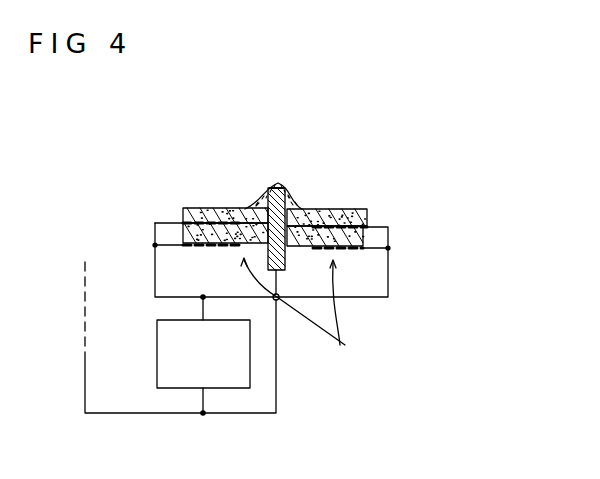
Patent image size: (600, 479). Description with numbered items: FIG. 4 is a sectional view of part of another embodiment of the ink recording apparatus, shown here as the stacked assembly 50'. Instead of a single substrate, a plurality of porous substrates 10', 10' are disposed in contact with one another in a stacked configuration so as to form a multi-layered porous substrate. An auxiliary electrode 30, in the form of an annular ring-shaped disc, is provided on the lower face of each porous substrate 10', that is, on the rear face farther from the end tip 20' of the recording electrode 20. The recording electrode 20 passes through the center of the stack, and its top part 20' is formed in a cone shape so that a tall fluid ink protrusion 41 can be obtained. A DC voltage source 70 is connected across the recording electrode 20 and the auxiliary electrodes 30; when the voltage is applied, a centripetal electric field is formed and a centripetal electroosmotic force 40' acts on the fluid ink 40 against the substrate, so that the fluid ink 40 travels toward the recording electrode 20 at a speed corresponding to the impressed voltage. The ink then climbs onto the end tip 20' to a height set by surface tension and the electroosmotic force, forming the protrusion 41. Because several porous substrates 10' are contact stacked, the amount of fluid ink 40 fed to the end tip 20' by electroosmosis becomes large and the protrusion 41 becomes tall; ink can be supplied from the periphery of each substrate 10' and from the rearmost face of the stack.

The piezoelectric device assembly 50' is at (238, 232).
The fluid ink 40 is at (279, 193).
The porous substrate 10' is at (310, 214).
The auxiliary electrode 30 is at (183, 207).
The protrusion 41 is at (288, 192).
The end tip of the recording electrode 20' is at (283, 160).
The recording electrode 20 is at (292, 237).
The centripetal electroosmotic force 40' is at (307, 311).
The DC voltage source 70 is at (155, 329).